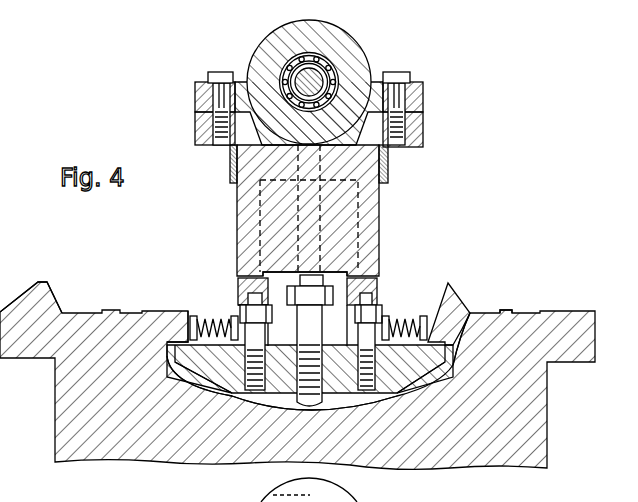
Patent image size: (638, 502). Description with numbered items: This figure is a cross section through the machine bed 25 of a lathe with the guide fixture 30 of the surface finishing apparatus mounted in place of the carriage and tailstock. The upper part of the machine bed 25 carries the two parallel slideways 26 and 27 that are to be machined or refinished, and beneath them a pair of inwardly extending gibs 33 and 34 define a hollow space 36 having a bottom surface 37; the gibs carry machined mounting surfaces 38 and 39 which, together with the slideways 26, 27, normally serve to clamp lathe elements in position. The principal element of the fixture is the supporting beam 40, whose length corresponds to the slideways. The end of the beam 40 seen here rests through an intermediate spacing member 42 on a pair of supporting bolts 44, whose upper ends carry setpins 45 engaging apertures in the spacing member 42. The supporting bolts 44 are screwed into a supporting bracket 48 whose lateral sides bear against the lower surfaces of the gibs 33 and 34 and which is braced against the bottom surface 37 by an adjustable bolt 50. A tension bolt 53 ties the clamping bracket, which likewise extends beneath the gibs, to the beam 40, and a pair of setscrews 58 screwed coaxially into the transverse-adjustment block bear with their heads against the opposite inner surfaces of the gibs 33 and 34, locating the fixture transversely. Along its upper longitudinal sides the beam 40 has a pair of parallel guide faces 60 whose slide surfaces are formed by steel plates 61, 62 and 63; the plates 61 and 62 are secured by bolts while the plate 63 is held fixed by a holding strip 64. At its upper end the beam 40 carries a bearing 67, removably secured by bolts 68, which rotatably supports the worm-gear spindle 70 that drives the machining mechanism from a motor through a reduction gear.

The machine bed 25 is at (528, 428).
The slideway 26 is at (42, 293).
The slideway 27 is at (510, 312).
The guide fixture 30 is at (378, 54).
The gib 33 is at (182, 342).
The gib 34 is at (437, 306).
The hollow space 36 is at (423, 377).
The bottom surface 37 is at (190, 380).
The mounting surface 38 is at (165, 365).
The mounting surface 39 is at (480, 317).
The supporting beam 40 is at (380, 208).
The spacing member 42 is at (385, 279).
The supporting bolt 44 is at (265, 336).
The setpin 45 is at (238, 298).
The supporting bracket 48 is at (273, 387).
The adjustable bolt 50 is at (330, 382).
The tension bolt 53 is at (300, 282).
The setscrew 58 is at (219, 326).
The guide face 60 is at (198, 121).
The steel plate 61 is at (418, 98).
The steel plate 62 is at (421, 137).
The steel plate 63 is at (413, 150).
The holding strip 64 is at (390, 172).
The bearing 67 is at (257, 49).
The bolt 68 is at (210, 89).
The worm-gear spindle 70 is at (312, 80).